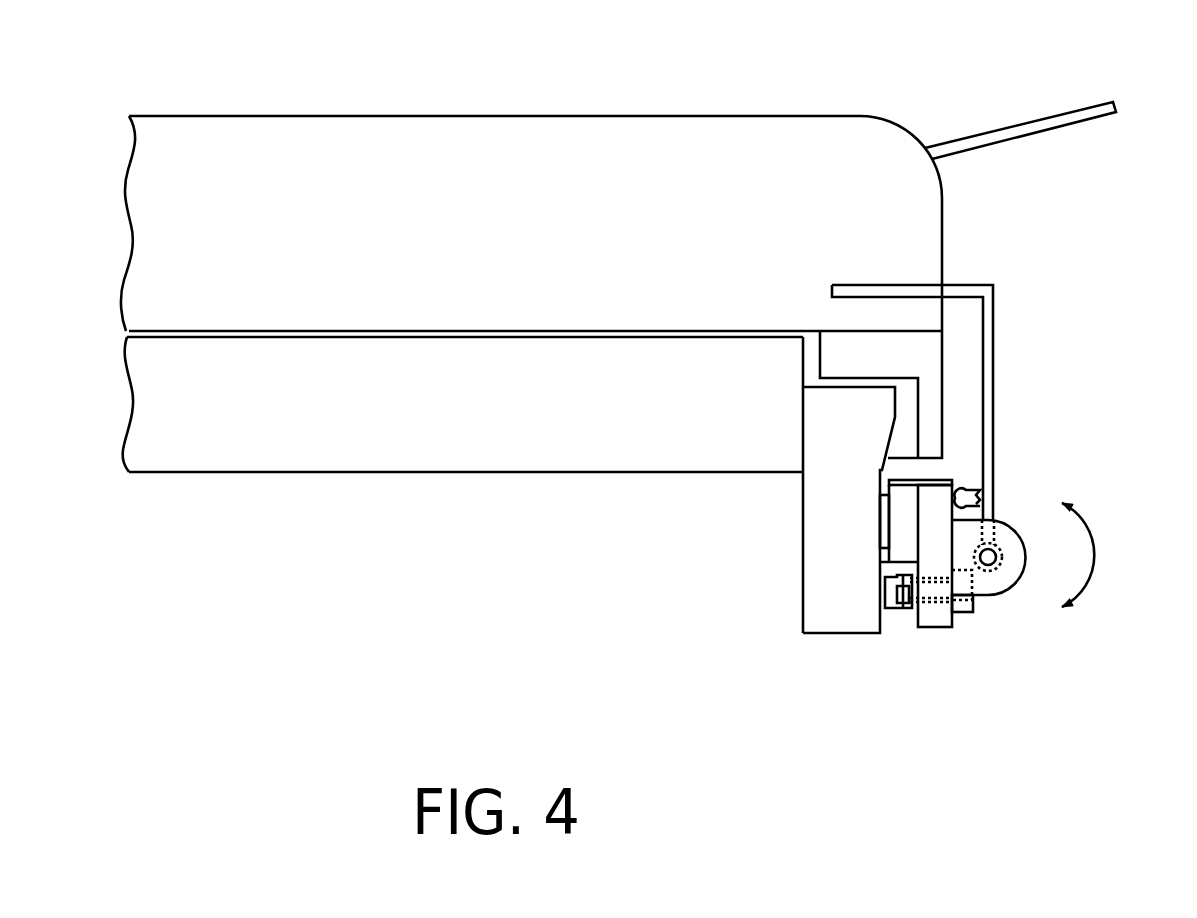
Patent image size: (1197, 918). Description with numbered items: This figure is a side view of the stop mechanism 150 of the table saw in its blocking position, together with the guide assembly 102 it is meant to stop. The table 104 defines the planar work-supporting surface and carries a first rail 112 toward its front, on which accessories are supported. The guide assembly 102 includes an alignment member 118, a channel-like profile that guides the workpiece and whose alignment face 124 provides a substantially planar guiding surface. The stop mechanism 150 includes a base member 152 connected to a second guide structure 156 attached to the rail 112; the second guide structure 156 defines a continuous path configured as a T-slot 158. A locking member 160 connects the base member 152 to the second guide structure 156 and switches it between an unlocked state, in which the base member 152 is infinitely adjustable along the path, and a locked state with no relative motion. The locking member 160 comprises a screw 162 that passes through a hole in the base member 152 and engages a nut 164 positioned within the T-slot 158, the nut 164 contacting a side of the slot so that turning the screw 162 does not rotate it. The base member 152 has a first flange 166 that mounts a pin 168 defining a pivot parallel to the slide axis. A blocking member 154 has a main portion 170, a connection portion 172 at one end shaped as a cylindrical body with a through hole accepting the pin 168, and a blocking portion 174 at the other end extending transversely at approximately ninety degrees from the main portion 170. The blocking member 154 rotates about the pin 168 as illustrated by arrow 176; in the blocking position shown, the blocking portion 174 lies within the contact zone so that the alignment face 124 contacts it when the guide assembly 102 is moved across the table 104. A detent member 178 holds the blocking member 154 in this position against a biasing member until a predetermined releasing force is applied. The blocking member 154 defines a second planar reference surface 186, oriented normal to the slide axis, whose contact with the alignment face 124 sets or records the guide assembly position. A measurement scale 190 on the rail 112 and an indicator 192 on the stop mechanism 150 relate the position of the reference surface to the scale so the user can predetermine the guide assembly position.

The guide assembly 102 is at (525, 65).
The table 104 is at (277, 473).
The first rail 112 is at (803, 588).
The alignment member 118 is at (730, 115).
The alignment face 124 is at (873, 165).
The stop mechanism 150 is at (946, 625).
The base member 152 is at (932, 630).
The blocking member 154 is at (1038, 377).
The second guide structure 156 is at (888, 620).
The T-slot 158 is at (892, 582).
The locking member 160 is at (967, 617).
The screw 162 is at (973, 603).
The nut 164 is at (900, 603).
The first flange 166 is at (1007, 520).
The pin 168 is at (995, 569).
The main portion 170 is at (993, 425).
The connection portion 172 is at (990, 572).
The blocking portion 174 is at (977, 285).
The arrow 176 is at (1094, 532).
The detent member 178 is at (962, 478).
The second planar reference surface 186 is at (898, 290).
The measurement scale 190 is at (880, 513).
The indicator 192 is at (900, 483).